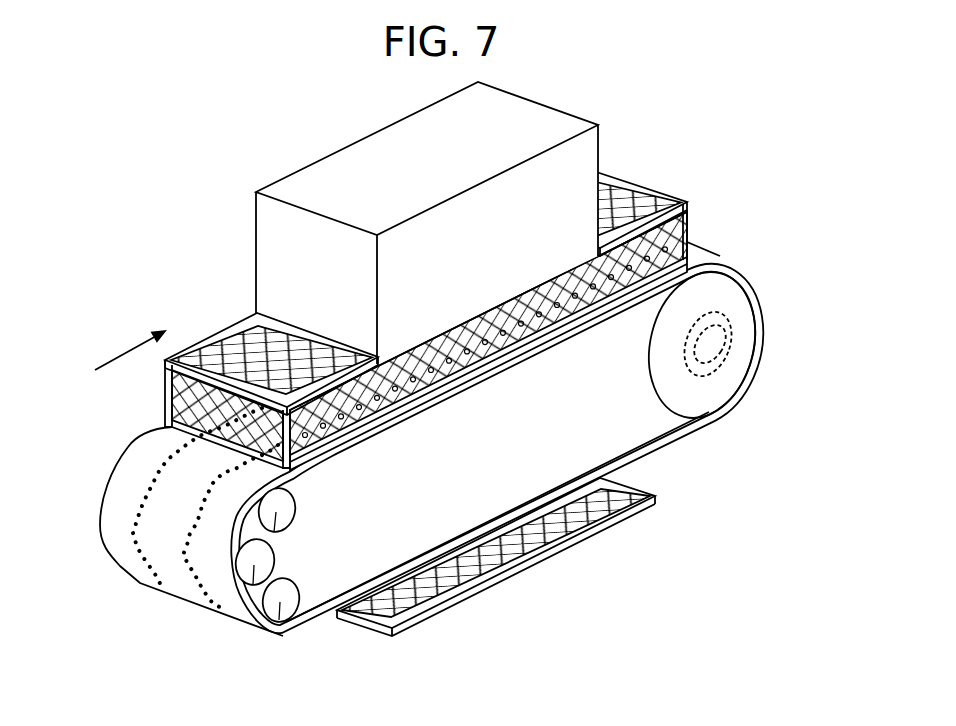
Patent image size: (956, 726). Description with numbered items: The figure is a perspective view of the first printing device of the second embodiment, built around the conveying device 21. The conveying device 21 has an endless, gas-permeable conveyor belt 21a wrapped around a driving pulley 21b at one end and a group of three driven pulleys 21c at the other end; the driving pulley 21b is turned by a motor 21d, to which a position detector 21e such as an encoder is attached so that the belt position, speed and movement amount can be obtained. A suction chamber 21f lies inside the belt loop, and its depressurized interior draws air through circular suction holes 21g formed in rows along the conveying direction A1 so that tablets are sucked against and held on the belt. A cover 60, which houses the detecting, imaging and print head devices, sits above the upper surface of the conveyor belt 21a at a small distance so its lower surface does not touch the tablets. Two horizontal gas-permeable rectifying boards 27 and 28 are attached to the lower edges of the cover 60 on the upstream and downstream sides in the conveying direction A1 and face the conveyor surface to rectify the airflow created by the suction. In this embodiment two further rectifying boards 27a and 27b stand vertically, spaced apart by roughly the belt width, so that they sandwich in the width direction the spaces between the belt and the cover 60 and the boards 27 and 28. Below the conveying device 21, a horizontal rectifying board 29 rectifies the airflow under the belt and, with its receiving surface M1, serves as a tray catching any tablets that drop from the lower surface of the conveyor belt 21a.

The conveying device 21 is at (721, 228).
The conveyor belt 21a is at (123, 487).
The driving pulley 21b is at (738, 388).
The driven pulleys 21c is at (255, 565).
The motor 21d is at (735, 330).
The position detector 21e is at (723, 344).
The suction chamber 21f is at (643, 436).
The suction holes 21g is at (183, 555).
The rectifying board 27 is at (205, 320).
The rectifying board 27a is at (347, 430).
The rectifying board 27b is at (168, 390).
The rectifying board 28 is at (640, 182).
The rectifying board 29 is at (496, 557).
The cover 60 is at (335, 167).
The conveying direction A1 is at (130, 345).
The receiving surface M1 is at (560, 543).